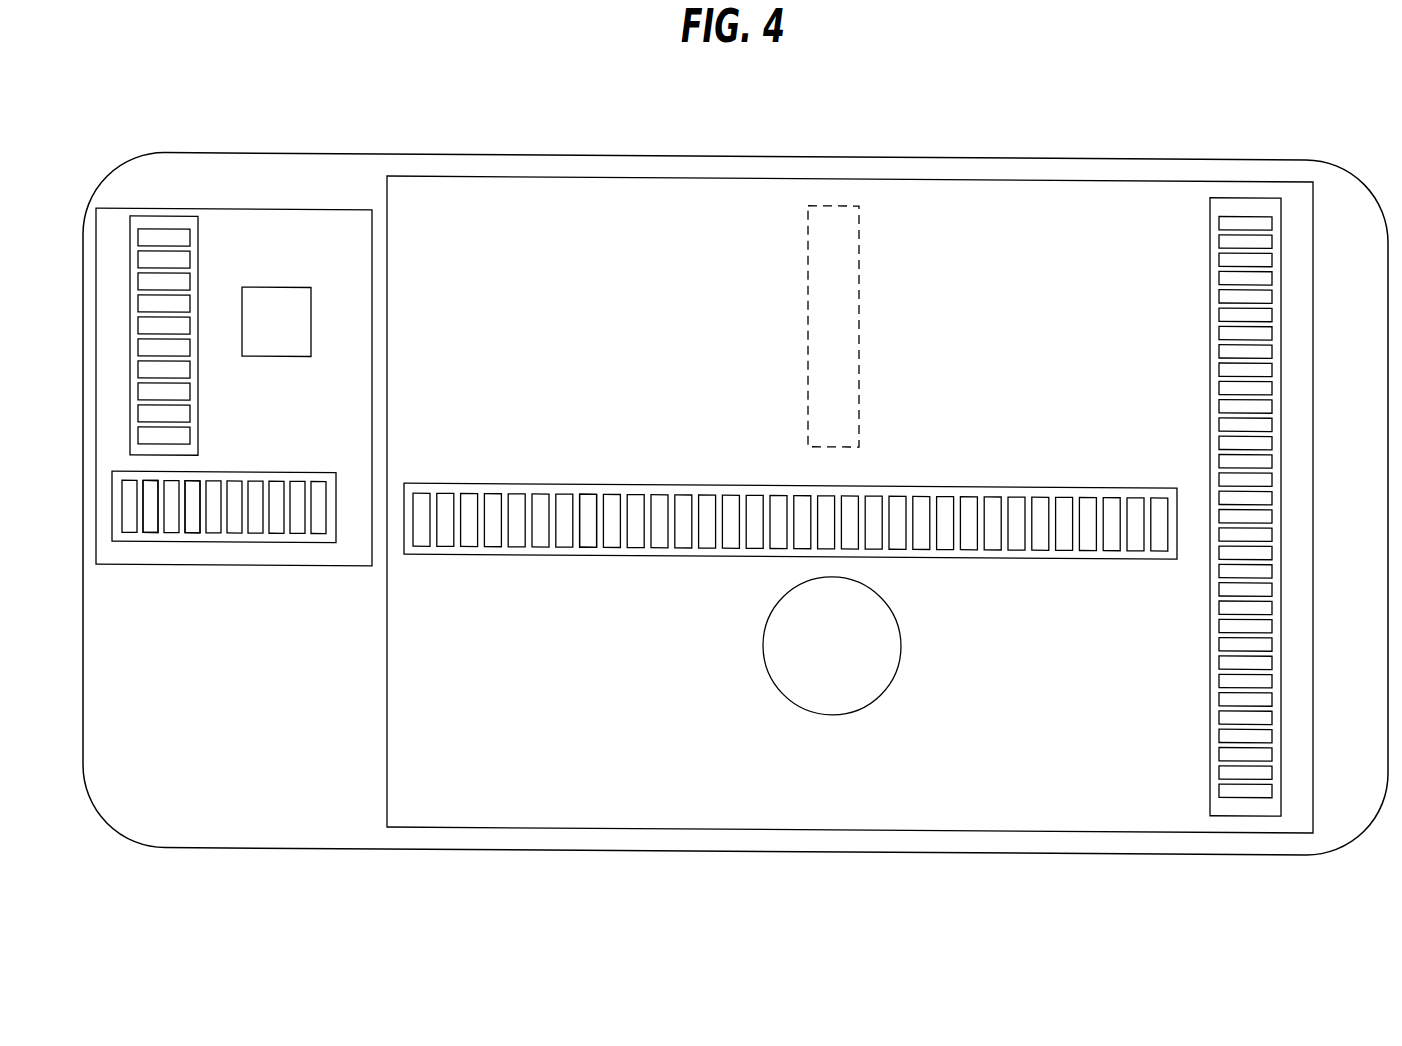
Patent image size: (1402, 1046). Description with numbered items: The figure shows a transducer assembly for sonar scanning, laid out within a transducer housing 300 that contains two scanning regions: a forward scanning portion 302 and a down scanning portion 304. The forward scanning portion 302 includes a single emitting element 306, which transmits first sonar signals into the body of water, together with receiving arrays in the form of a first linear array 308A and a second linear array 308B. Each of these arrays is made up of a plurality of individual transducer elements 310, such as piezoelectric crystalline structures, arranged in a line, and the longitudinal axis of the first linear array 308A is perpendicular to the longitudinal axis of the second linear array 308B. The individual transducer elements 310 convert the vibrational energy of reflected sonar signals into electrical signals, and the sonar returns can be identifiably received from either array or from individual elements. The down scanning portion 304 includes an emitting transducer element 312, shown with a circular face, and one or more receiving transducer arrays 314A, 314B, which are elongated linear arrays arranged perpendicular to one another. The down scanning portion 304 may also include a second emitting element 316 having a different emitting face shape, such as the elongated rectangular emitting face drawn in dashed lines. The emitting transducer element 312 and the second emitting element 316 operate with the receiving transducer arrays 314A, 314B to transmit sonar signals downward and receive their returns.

The transducer housing 300 is at (735, 541).
The forward scanning portion 302 is at (234, 415).
The down scanning portion 304 is at (850, 472).
The emitting element 306 is at (293, 338).
The first linear array 308A is at (217, 336).
The second linear array 308B is at (228, 491).
The individual transducer elements 310 is at (218, 654).
The emitting transducer element 312 is at (868, 664).
The receiving transducer array 314A is at (1153, 507).
The receiving transducer array 314B is at (790, 550).
The second emitting element 316 is at (789, 326).